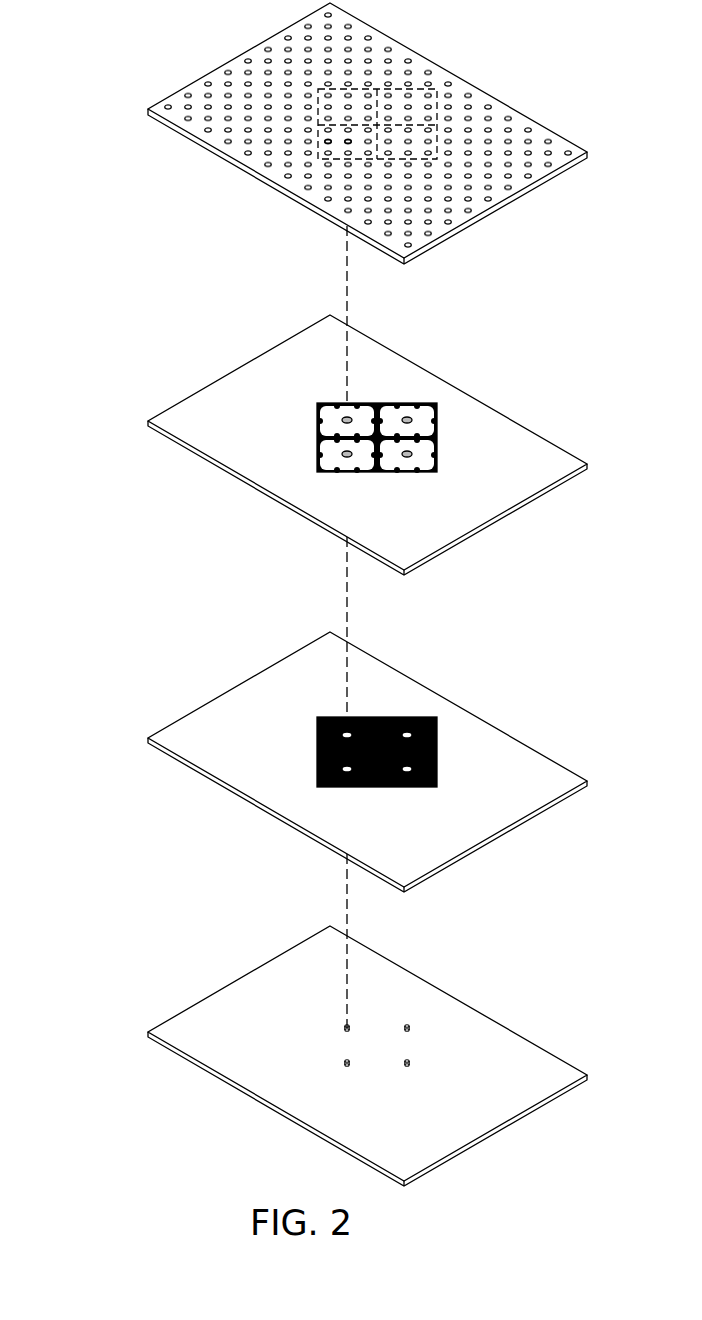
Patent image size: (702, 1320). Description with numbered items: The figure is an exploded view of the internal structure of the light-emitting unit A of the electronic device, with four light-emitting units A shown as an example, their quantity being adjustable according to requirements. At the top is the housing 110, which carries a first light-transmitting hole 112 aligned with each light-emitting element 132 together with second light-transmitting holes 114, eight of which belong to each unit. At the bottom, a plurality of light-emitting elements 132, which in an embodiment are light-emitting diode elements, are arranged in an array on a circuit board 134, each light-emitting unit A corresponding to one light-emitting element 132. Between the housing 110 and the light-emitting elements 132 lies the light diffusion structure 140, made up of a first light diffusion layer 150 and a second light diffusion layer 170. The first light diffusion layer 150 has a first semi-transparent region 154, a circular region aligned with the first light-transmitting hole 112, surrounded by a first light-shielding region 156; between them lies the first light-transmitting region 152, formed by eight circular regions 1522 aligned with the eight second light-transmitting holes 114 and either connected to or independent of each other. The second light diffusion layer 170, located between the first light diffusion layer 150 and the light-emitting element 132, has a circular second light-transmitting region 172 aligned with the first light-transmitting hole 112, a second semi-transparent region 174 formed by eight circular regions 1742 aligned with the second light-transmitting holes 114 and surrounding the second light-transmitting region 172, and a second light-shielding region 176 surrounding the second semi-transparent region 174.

The housing 110 is at (527, 117).
The first light-transmitting hole 112 is at (349, 138).
The second light-transmitting hole 114 is at (329, 138).
The light-emitting unit A is at (317, 143).
The light diffusion structure 140 is at (88, 284).
The first light diffusion layer 150 is at (282, 423).
The first light-transmitting region 152 is at (304, 397).
The first semi-transparent region 154 is at (347, 417).
The circular region 1522 is at (286, 397).
The first light-shielding region 156 is at (317, 427).
The second light diffusion layer 170 is at (282, 738).
The second light-transmitting region 172 is at (347, 733).
The second semi-transparent region 174 is at (304, 714).
The circular region 1742 is at (286, 714).
The second light-shielding region 176 is at (317, 743).
The light-emitting element 132 is at (344, 1028).
The circuit board 134 is at (487, 1017).